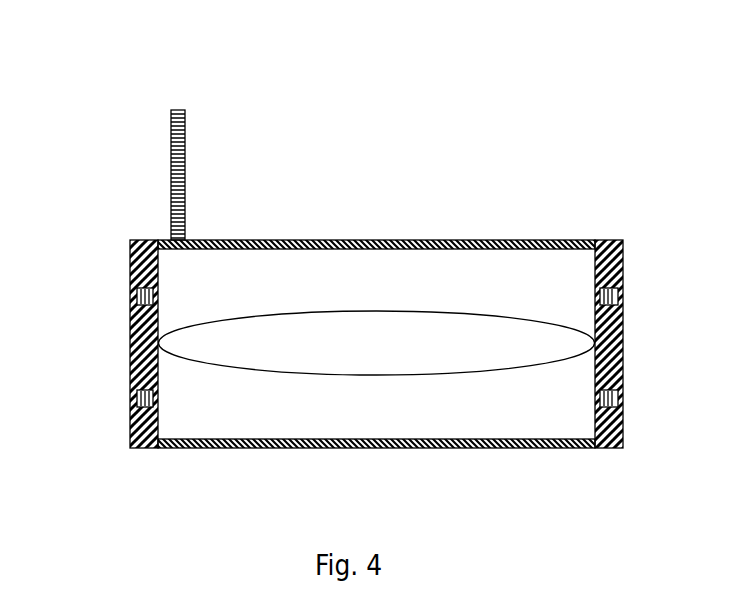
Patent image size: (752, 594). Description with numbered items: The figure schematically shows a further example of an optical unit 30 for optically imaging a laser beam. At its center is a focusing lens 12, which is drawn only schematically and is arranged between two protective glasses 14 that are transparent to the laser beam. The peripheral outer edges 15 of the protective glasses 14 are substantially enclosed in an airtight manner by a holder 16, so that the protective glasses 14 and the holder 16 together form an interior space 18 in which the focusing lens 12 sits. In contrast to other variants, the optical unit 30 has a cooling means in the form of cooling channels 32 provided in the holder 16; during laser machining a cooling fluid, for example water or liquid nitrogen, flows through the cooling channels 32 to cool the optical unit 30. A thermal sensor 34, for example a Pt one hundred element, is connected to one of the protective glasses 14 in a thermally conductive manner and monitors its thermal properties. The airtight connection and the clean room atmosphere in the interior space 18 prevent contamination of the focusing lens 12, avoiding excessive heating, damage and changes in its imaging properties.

The optical unit 30 is at (550, 115).
The focusing lens 12 is at (440, 310).
The protective glasses 14 is at (435, 240).
The peripheral outer edges 15 is at (158, 238).
The holder 16 is at (129, 265).
The interior space 18 is at (560, 297).
The cooling channels 32 is at (136, 297).
The thermal sensor 34 is at (185, 140).